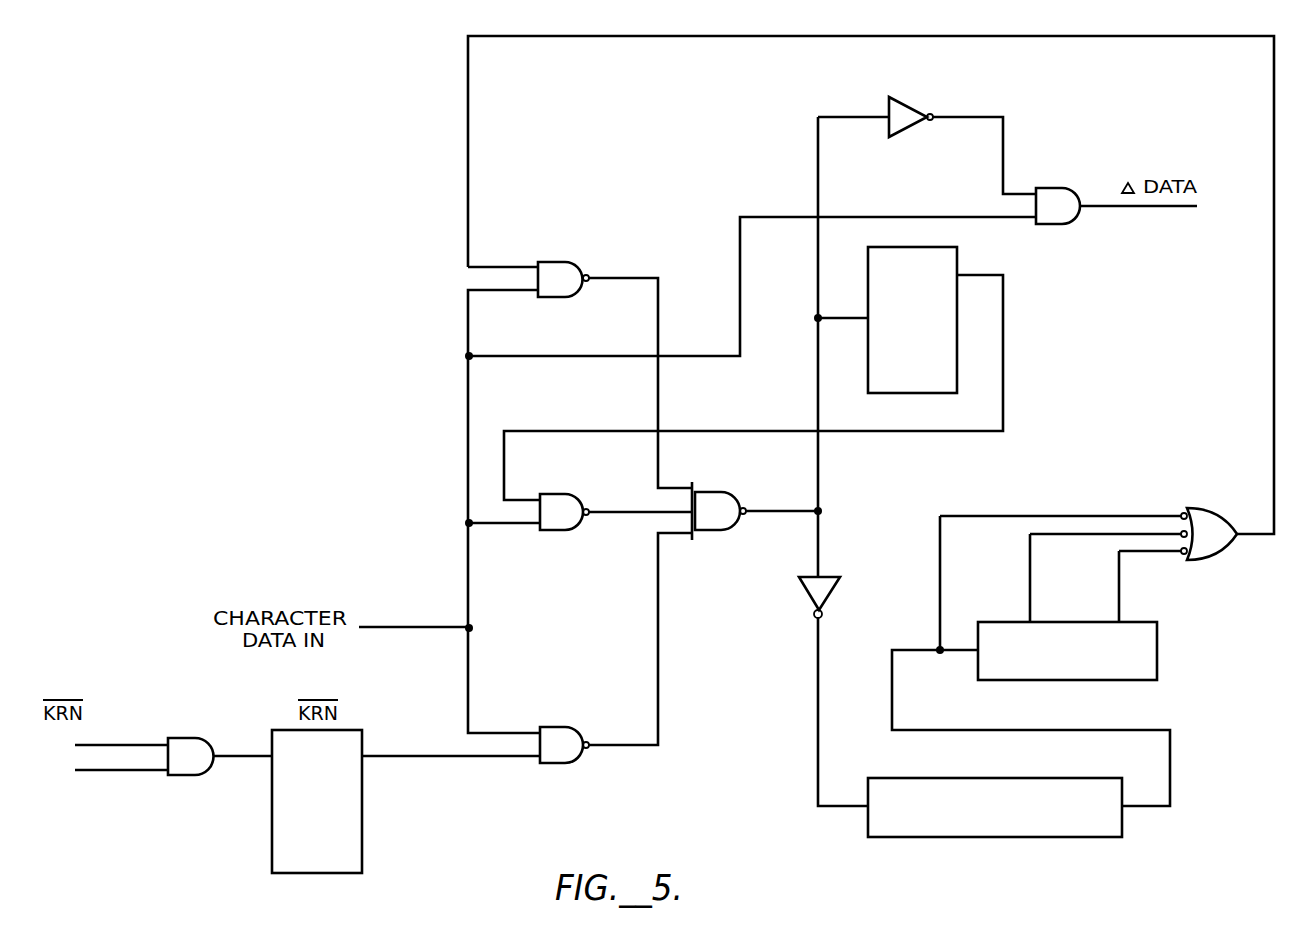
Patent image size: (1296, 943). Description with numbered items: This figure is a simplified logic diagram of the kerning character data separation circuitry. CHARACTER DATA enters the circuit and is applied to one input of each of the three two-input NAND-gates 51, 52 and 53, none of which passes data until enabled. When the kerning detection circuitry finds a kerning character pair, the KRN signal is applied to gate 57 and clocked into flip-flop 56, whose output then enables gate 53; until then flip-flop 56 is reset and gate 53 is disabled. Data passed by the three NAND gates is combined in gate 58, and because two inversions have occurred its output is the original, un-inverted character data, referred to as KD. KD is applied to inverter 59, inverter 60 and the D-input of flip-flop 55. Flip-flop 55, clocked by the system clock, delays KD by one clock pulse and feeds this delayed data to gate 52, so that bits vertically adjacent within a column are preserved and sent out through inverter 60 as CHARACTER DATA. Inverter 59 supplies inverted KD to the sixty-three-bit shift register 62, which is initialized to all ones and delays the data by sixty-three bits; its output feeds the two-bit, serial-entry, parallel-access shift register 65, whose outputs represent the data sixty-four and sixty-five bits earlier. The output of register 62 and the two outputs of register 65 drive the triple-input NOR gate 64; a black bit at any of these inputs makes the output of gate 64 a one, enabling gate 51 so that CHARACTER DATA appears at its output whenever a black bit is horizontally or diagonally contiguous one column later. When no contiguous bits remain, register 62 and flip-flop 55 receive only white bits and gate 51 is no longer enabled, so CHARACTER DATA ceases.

The two-input NAND-gate 51 is at (566, 262).
The two-input NAND-gate 52 is at (568, 494).
The two-input NAND-gate 53 is at (568, 727).
The flip-flop 55 is at (957, 252).
The flip-flop 56 is at (358, 731).
The gate 57 is at (200, 738).
The gate 58 is at (718, 492).
The inverter 59 is at (908, 97).
The inverter 60 is at (1060, 188).
The shift register 62 is at (1087, 778).
The triple input NOR gate 64 is at (1205, 512).
The shift register 65 is at (1143, 622).